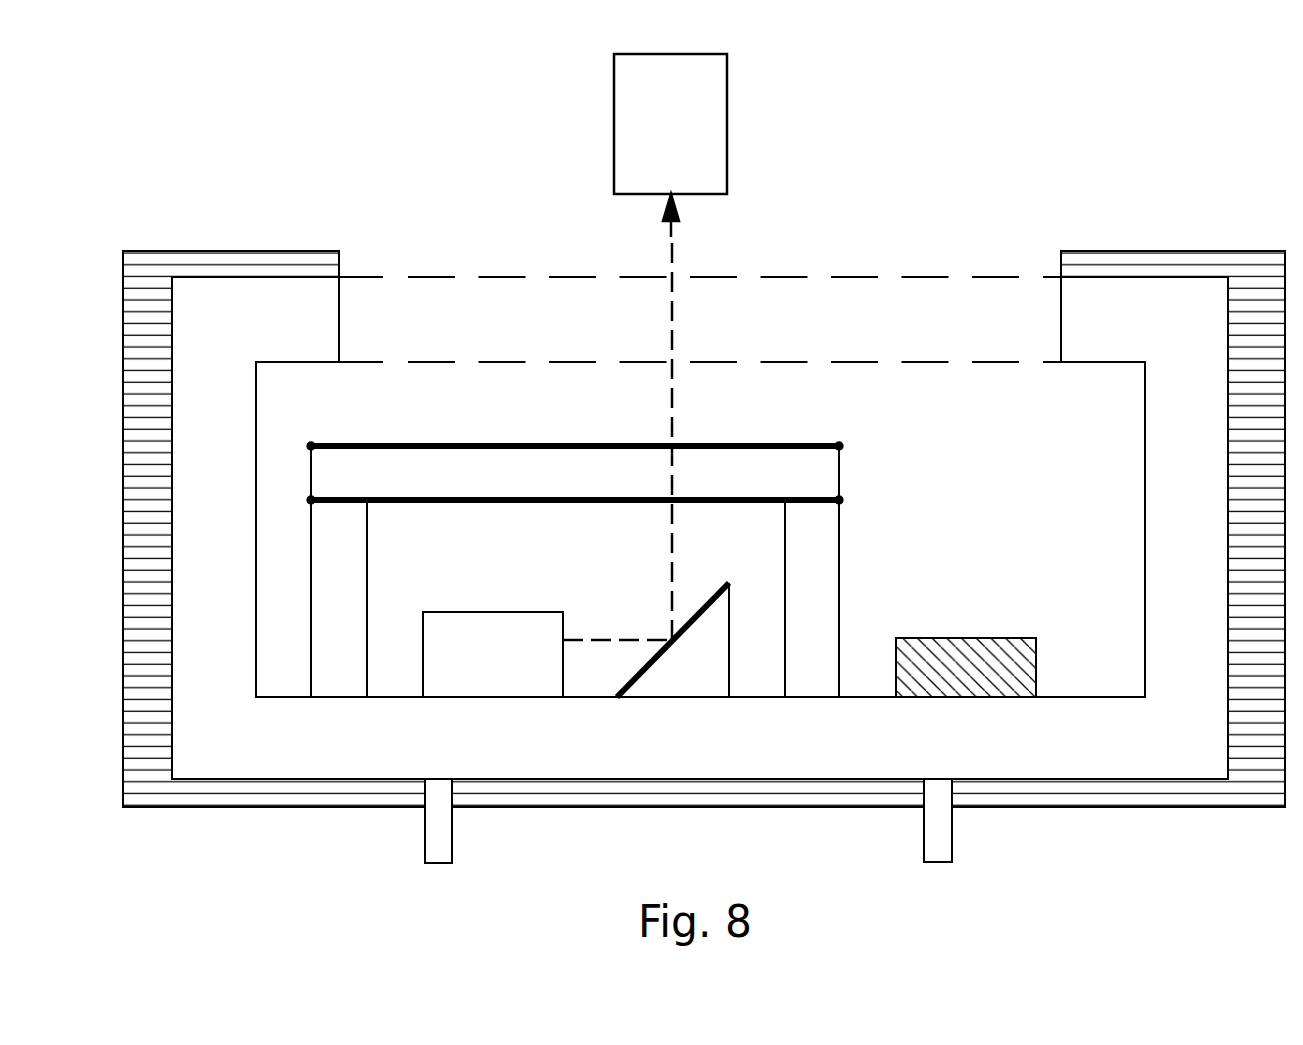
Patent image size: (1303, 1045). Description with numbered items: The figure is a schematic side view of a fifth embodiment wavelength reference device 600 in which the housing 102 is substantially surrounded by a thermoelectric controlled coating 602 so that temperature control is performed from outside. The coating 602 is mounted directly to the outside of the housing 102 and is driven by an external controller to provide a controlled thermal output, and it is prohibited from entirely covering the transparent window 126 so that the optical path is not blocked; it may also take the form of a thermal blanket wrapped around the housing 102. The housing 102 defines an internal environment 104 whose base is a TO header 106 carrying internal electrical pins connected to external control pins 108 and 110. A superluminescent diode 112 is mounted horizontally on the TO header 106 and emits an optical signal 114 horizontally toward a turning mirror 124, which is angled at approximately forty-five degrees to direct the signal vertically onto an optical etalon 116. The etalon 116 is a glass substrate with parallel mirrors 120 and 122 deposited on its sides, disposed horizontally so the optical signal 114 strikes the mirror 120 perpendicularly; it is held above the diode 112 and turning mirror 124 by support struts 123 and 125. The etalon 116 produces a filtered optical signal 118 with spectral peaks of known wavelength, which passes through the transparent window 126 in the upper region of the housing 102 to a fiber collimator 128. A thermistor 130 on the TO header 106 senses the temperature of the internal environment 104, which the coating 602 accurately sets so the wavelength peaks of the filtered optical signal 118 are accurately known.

The wavelength reference device 600 is at (310, 188).
The housing 102 is at (222, 277).
The thermoelectric controlled coating 602 is at (1158, 250).
The internal environment 104 is at (700, 529).
The TO header 106 is at (826, 740).
The external control pin 108 is at (422, 822).
The external control pin 110 is at (924, 815).
The superluminescent diode 112 is at (495, 612).
The optical signal 114 is at (612, 638).
The optical etalon 116 is at (311, 460).
The filtered optical signal 118 is at (669, 408).
The mirror 120 is at (839, 498).
The mirror 122 is at (839, 444).
The support strut 123 is at (318, 613).
The turning mirror 124 is at (697, 608).
The support strut 125 is at (835, 622).
The transparent window 126 is at (917, 246).
The fiber collimator 128 is at (727, 110).
The thermistor 130 is at (978, 638).